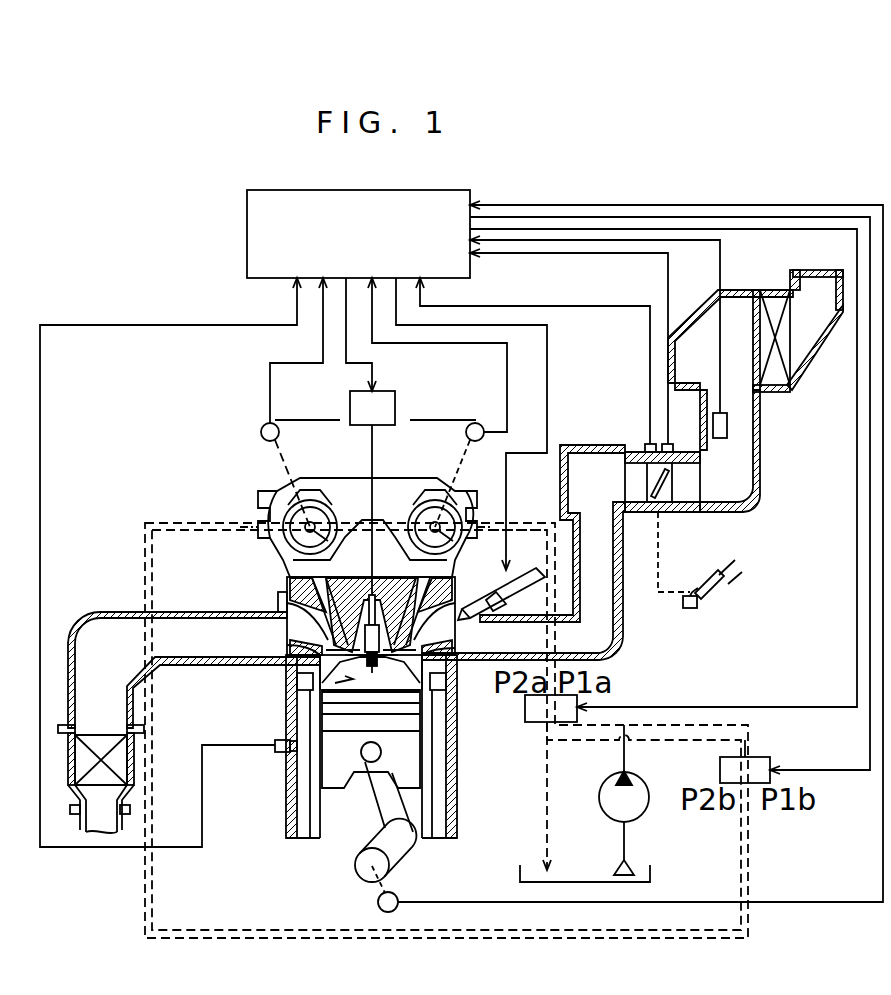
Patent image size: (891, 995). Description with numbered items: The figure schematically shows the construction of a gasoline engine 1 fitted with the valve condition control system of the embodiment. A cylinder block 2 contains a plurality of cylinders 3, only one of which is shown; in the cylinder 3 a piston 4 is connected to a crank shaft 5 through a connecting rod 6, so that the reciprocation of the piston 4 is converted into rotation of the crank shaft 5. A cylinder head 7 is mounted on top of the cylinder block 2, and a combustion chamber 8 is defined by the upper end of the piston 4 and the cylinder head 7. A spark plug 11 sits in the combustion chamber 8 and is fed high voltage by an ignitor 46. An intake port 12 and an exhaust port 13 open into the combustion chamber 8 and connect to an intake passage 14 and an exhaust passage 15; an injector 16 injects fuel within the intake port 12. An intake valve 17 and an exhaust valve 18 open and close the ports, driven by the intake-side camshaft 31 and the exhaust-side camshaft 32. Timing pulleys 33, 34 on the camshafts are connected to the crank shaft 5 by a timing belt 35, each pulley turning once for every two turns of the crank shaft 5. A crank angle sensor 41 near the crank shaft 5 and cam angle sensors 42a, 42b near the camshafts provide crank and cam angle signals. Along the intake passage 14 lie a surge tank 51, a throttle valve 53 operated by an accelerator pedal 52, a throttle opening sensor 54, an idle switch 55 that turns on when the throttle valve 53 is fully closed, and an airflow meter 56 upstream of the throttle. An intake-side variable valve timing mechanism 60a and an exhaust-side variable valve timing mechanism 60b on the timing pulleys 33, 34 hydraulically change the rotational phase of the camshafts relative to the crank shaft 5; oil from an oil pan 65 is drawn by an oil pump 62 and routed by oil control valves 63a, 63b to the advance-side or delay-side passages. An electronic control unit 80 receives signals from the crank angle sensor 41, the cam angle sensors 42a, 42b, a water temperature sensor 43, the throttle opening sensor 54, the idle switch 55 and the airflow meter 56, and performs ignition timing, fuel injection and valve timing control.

The gasoline engine 1 is at (535, 758).
The cylinder block 2 is at (286, 818).
The cylinder 3 is at (322, 838).
The piston 4 is at (363, 767).
The crank shaft 5 is at (355, 873).
The connecting rod 6 is at (382, 808).
The cylinder head 7 is at (277, 578).
The combustion chamber 8 is at (286, 720).
The spark plug 11 is at (379, 603).
The intake port 12 is at (485, 620).
The exhaust port 13 is at (293, 623).
The intake passage 14 is at (605, 622).
The exhaust passage 15 is at (193, 647).
The injector 16 is at (525, 572).
The intake valve 17 is at (413, 656).
The exhaust valve 18 is at (287, 664).
The intake-side camshaft 31 is at (470, 513).
The exhaust-side camshaft 32 is at (327, 543).
The timing pulley 33 is at (462, 502).
The timing pulley 34 is at (320, 500).
The timing belt 35 is at (383, 500).
The crank angle sensor 41 is at (378, 903).
The cam angle sensor 42a is at (477, 423).
The cam angle sensor 42b is at (261, 431).
The water temperature sensor 43 is at (277, 755).
The ignitor 46 is at (388, 391).
The surge tank 51 is at (568, 488).
The accelerator pedal 52 is at (707, 568).
The throttle valve 53 is at (672, 478).
The throttle opening sensor 54 is at (650, 444).
The idle switch 55 is at (668, 444).
The airflow meter 56 is at (728, 425).
The intake-side variable valve timing mechanism 60a is at (432, 498).
The exhaust-side variable valve timing mechanism 60b is at (312, 498).
The oil pump 62 is at (636, 806).
The oil control valve 63a is at (525, 703).
The oil control valve 63b is at (762, 758).
The oil pan 65 is at (652, 870).
The electronic control unit 80 is at (247, 263).